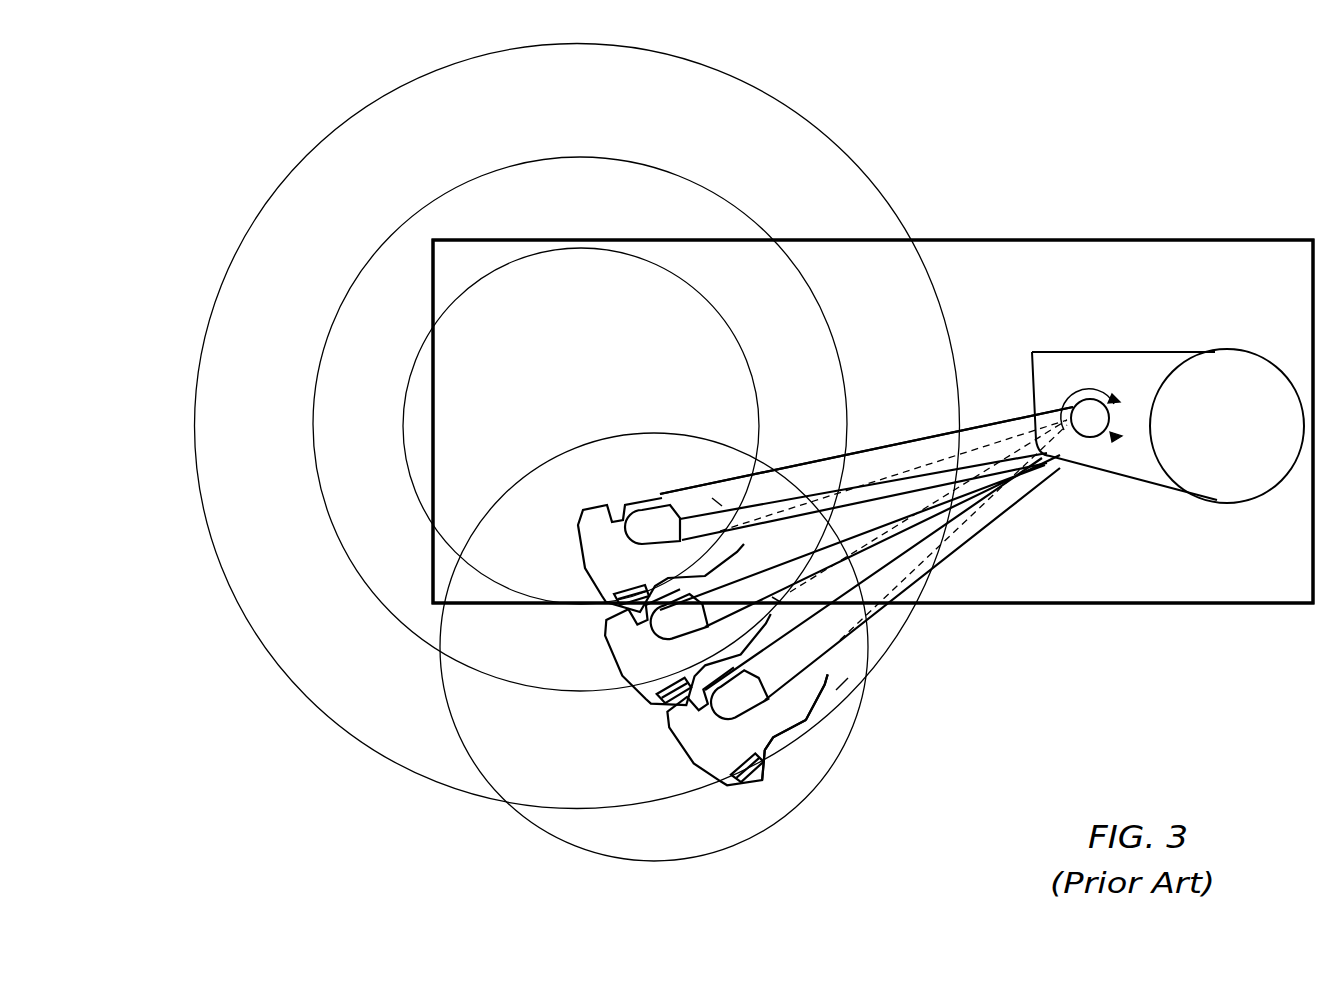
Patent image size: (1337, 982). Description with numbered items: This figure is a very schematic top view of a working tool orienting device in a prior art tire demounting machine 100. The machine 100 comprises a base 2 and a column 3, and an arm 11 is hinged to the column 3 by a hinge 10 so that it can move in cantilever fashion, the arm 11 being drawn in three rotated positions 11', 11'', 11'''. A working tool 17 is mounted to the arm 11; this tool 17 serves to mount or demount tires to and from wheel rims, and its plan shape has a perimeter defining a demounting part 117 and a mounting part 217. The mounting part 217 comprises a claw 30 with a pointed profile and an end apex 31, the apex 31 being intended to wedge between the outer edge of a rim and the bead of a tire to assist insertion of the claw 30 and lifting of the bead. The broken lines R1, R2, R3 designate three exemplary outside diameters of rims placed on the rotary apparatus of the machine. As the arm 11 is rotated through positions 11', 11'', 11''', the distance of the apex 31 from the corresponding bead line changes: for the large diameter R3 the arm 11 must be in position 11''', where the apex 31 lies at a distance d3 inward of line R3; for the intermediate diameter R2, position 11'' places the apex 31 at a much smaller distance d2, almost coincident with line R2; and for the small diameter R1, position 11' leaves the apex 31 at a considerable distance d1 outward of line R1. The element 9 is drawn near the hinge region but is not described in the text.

The tire demounting machine 100 is at (1177, 197).
The base 2 is at (1264, 603).
The column 3 is at (1214, 392).
The actuator body 9 is at (1133, 468).
The hinge 10 is at (1092, 392).
The arm 11 is at (866, 469).
The arm position 11' is at (866, 468).
The arm position 11'' is at (860, 541).
The arm position 11''' is at (882, 579).
The rim outside diameter line R1 is at (745, 350).
The rim outside diameter line R2 is at (833, 343).
The rim outside diameter line R3 is at (947, 317).
The distance d1 is at (715, 500).
The distance d2 is at (777, 597).
The distance d3 is at (840, 682).
The working tool 17 is at (572, 566).
The demounting part 117 is at (731, 796).
The mounting part 217 is at (814, 725).
The claw 30 is at (782, 717).
The apex 31 is at (838, 678).